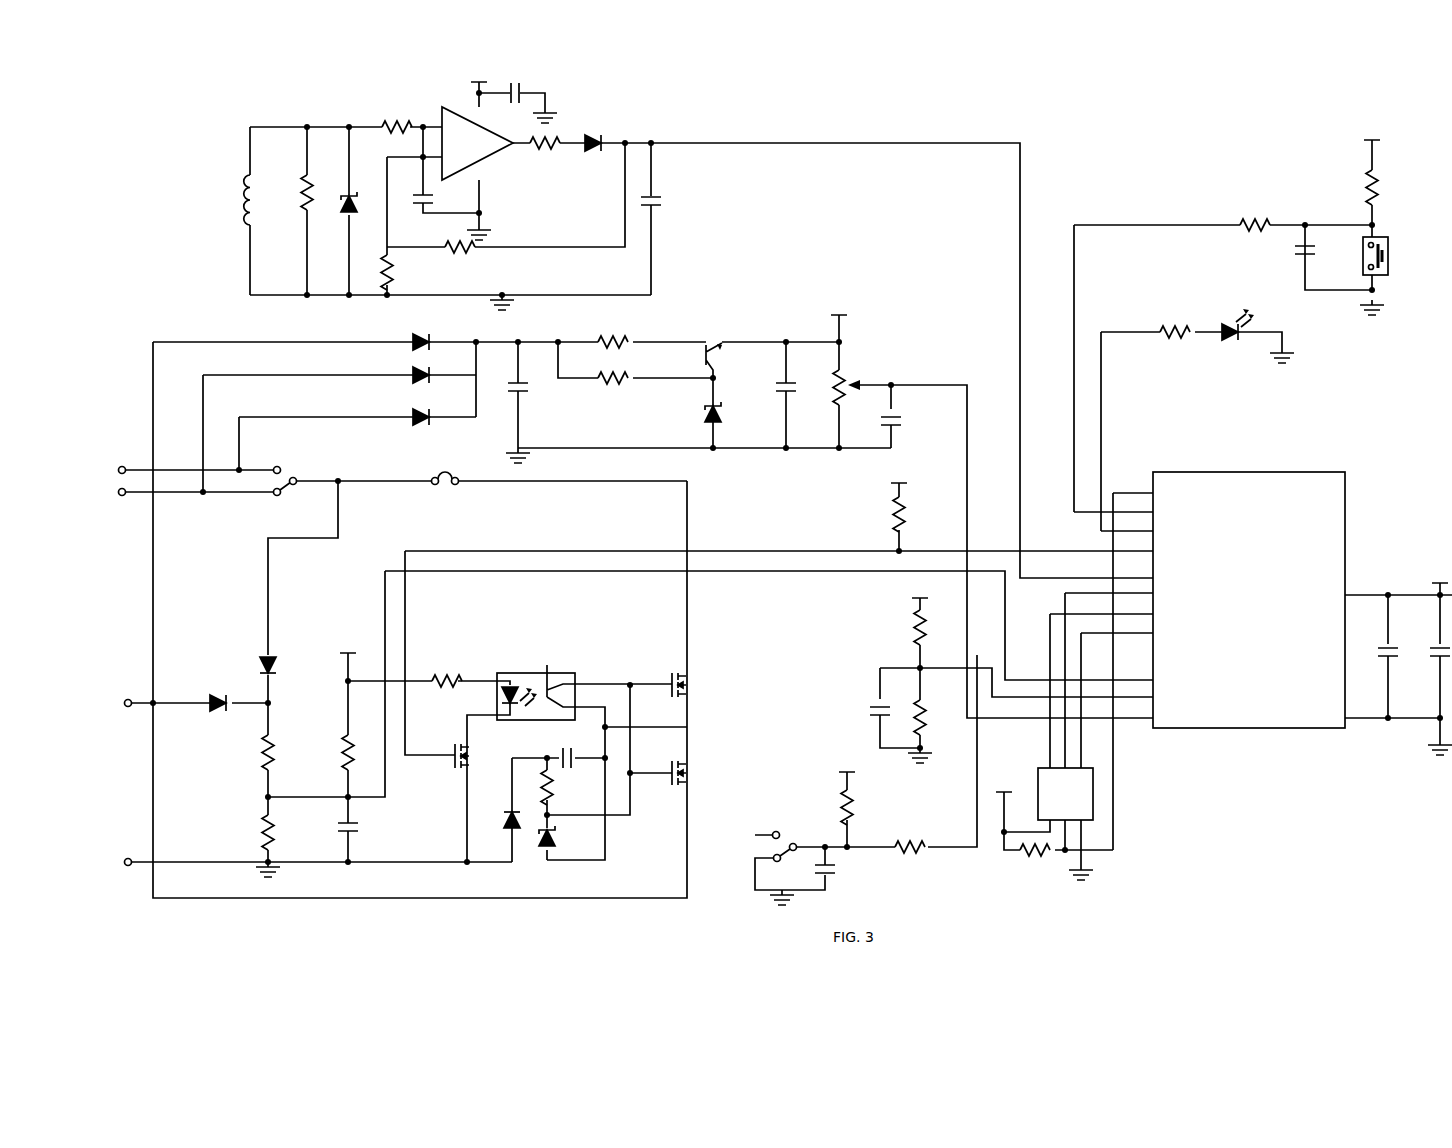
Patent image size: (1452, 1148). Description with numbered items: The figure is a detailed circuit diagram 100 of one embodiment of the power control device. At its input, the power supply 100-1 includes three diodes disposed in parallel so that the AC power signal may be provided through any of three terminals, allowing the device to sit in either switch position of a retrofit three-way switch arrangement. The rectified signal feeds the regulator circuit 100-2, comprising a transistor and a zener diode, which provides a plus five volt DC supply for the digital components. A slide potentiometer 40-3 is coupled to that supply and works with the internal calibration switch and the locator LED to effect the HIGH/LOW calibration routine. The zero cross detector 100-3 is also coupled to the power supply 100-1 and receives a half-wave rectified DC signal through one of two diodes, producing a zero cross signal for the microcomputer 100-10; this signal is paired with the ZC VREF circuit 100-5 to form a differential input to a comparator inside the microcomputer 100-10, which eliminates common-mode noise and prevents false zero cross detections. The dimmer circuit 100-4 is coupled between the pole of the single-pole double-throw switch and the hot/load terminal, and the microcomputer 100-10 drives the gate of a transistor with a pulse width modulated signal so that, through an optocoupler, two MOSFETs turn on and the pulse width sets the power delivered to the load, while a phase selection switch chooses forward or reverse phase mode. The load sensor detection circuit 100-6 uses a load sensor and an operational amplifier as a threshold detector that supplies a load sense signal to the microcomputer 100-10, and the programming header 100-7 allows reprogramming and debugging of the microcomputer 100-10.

The detailed circuit diagram 100 is at (146, 150).
The power supply 100-1 is at (157, 338).
The regulator circuit 100-2 is at (787, 336).
The zero cross detector 100-3 is at (270, 796).
The dimmer circuit 100-4 is at (664, 638).
The ZC VREF circuit 100-5 is at (845, 667).
The load sensor detection circuit 100-6 is at (247, 150).
The programming header 100-7 is at (1133, 819).
The microcomputer 100-10 is at (1418, 246).
The slide potentiometer 40-3 is at (852, 381).